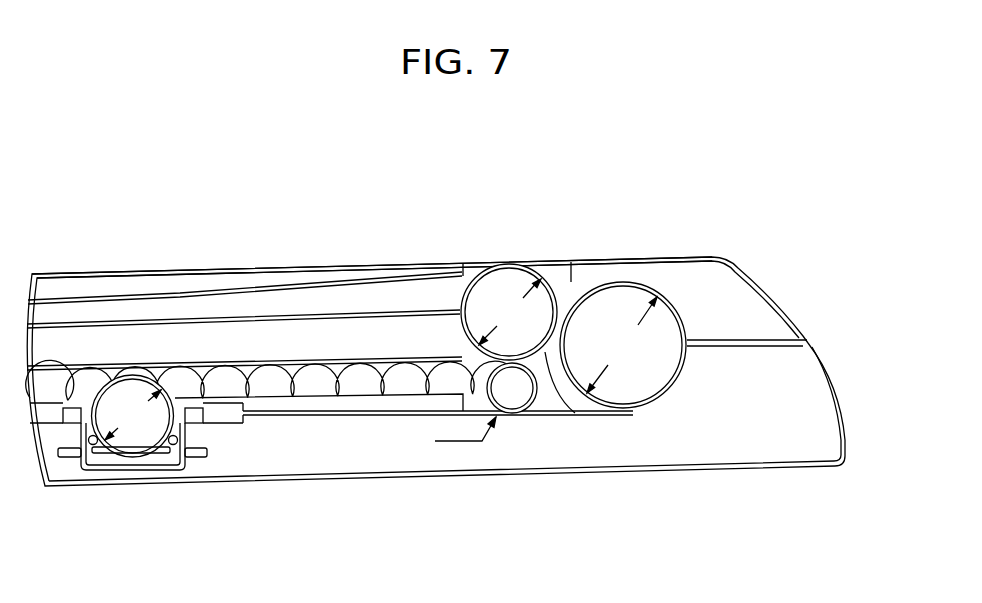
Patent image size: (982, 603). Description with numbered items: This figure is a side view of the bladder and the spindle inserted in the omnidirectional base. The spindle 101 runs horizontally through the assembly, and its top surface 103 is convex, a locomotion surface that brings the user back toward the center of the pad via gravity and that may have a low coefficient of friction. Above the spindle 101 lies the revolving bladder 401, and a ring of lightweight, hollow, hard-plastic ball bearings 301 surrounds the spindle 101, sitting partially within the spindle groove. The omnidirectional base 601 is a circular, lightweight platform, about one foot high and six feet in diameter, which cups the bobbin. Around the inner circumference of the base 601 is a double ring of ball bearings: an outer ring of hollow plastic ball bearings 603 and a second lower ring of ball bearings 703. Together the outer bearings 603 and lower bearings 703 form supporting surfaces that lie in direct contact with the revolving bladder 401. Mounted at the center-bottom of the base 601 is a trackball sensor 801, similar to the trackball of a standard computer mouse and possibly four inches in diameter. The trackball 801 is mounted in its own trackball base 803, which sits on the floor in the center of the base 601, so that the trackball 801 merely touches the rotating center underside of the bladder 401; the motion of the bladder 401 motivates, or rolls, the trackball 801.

The top locomotion surface 103 is at (110, 303).
The bladder 401 is at (290, 266).
The ball bearings 301 is at (509, 297).
The outer ring of ball bearings 603 is at (658, 338).
The spindle 101 is at (244, 340).
The omnidirectional base 601 is at (435, 371).
The lower ring of ball bearings 703 is at (520, 401).
The trackball sensor 801 is at (133, 443).
The trackball base 803 is at (178, 473).